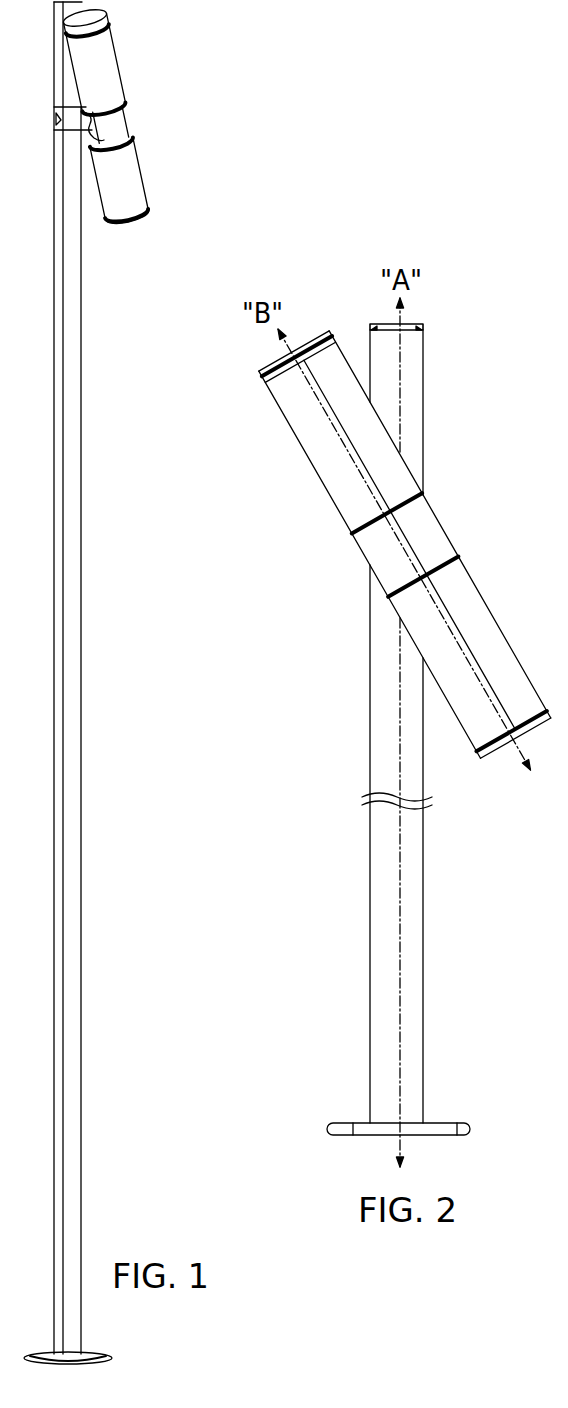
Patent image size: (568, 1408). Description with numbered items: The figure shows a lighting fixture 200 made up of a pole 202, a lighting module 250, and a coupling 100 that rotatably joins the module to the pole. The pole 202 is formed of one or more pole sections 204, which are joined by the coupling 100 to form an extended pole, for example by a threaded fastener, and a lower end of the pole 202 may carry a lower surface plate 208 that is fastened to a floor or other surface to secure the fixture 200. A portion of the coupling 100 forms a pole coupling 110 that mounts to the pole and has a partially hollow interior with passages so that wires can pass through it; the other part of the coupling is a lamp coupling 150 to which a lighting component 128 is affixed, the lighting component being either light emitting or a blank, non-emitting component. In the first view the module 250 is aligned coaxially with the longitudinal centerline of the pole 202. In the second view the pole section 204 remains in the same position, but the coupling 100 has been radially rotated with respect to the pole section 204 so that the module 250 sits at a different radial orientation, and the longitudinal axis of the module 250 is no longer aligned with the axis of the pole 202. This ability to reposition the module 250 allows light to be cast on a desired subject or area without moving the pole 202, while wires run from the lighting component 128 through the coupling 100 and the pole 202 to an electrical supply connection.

In FIG. 1, the coupling 100 is at (138, 122).
In FIG. 2, the coupling 100 is at (443, 527).
In FIG. 1, the pole coupling 110 is at (72, 138).
In FIG. 1, the lighting component 128 is at (125, 173).
In FIG. 1, the lamp coupling 150 is at (118, 113).
In FIG. 2, the lamp coupling 150 is at (368, 542).
In FIG. 1, the lighting module 250 is at (127, 60).
In FIG. 2, the lighting module 250 is at (478, 588).
In FIG. 1, the lighting fixture 200 is at (105, 495).
In FIG. 2, the lighting fixture 200 is at (468, 808).
In FIG. 1, the pole 202 is at (82, 700).
In FIG. 1, the pole section 204 is at (77, 617).
In FIG. 2, the pole section 204 is at (408, 932).
In FIG. 2, the lower surface plate 208 is at (350, 1120).